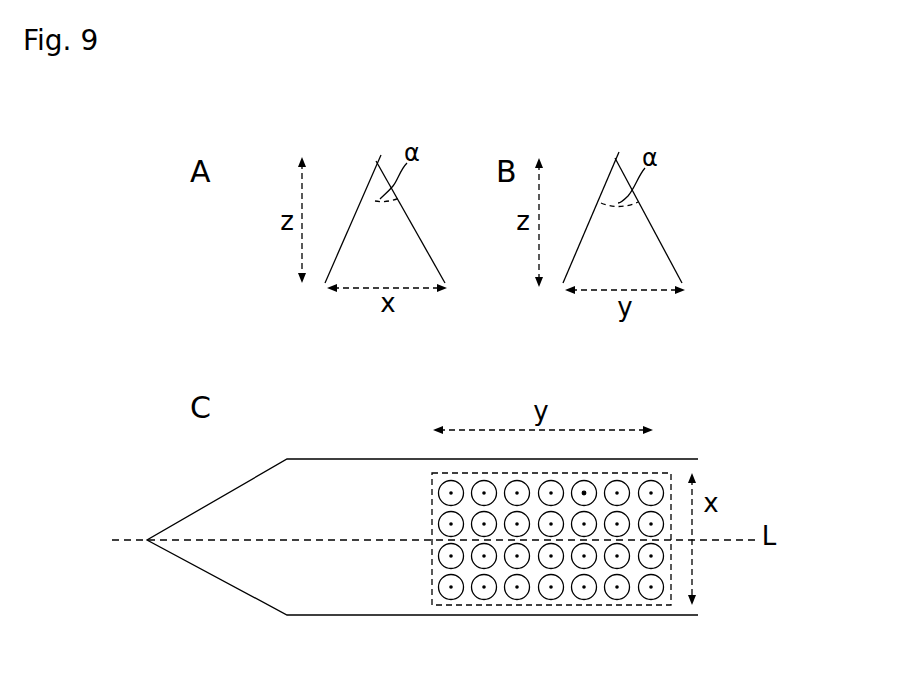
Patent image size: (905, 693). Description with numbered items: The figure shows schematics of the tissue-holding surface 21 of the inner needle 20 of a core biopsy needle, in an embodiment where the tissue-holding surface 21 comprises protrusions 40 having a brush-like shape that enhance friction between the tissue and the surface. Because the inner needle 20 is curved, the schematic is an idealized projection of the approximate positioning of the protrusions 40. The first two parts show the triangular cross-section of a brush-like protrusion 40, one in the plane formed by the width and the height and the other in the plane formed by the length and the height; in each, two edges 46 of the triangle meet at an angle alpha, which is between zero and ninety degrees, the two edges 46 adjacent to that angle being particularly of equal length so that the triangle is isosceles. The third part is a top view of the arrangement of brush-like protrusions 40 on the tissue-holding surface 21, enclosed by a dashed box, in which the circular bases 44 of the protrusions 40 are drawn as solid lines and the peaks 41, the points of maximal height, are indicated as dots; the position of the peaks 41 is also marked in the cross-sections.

The inner needle 20 is at (382, 462).
The tissue-holding surface 21 is at (438, 487).
The protrusion 40 is at (575, 487).
The peak 41 is at (380, 158).
The circular base 44 is at (584, 493).
The edge 46 is at (349, 223).